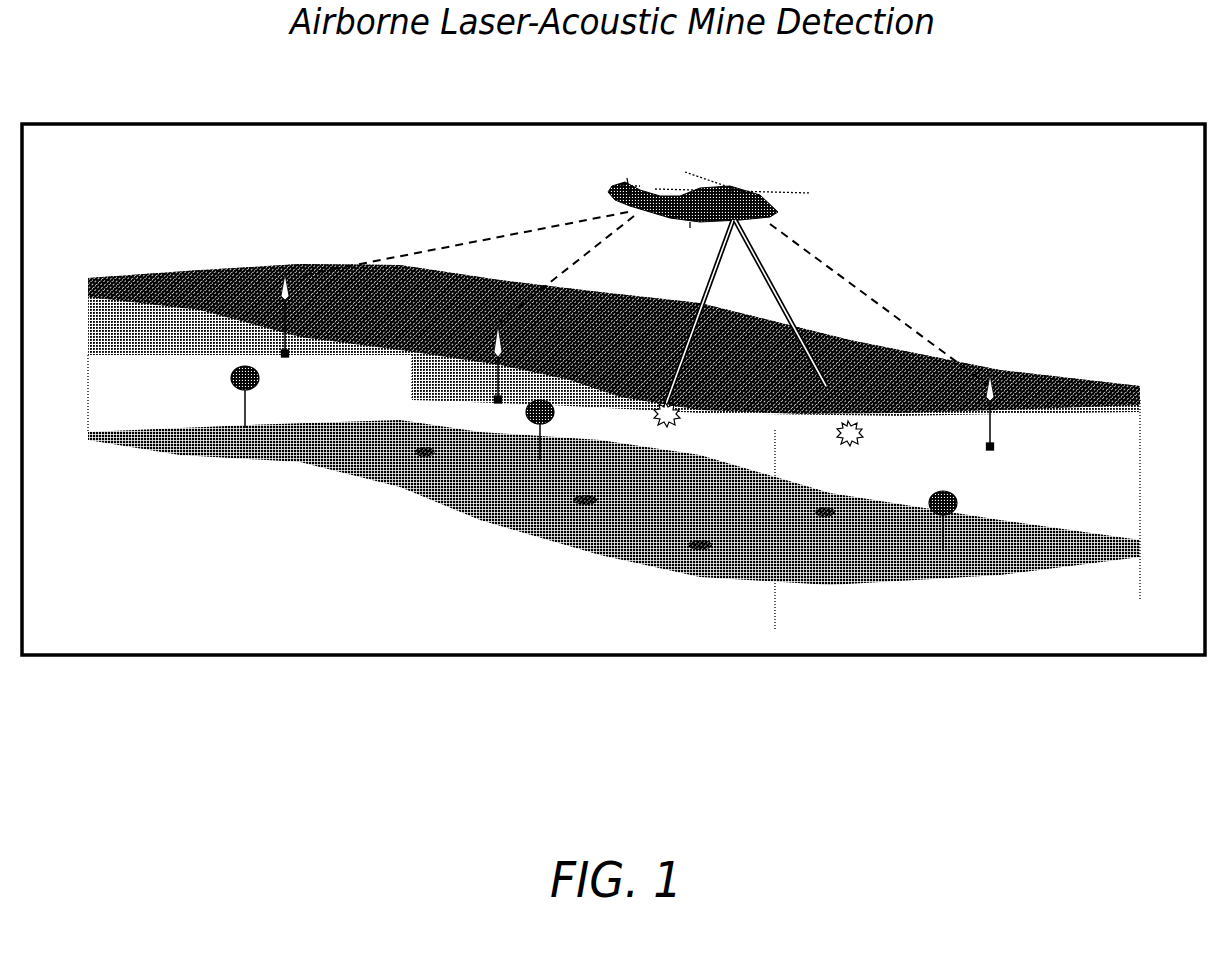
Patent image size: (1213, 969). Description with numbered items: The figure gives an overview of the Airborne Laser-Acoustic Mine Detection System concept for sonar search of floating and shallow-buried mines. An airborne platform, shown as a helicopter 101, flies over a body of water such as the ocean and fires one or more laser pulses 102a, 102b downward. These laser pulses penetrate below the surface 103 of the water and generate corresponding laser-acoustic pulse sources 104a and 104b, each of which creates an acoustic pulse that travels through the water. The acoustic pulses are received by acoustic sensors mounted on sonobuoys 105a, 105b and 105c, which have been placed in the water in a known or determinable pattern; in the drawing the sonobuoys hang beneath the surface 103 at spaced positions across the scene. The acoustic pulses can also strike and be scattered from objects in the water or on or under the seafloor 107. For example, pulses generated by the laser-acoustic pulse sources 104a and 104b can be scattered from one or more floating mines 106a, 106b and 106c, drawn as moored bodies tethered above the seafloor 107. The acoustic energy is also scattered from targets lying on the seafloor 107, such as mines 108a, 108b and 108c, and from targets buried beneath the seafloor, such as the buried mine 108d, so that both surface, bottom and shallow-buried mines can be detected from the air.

The helicopter 101 is at (786, 213).
The laser pulse 102a is at (698, 298).
The laser pulse 102b is at (820, 312).
The surface of the water 103 is at (1043, 383).
The laser-acoustic pulse source 104a is at (675, 420).
The laser-acoustic pulse source 104b is at (860, 440).
The sonobuoy 105a is at (272, 310).
The sonobuoy 105b is at (503, 355).
The sonobuoy 105c is at (990, 405).
The floating mine 106a is at (232, 386).
The floating mine 106b is at (556, 408).
The floating mine 106c is at (958, 508).
The seafloor 107 is at (366, 472).
The mine 108a is at (418, 455).
The mine 108b is at (566, 496).
The mine 108c is at (710, 546).
The buried mine 108d is at (830, 510).